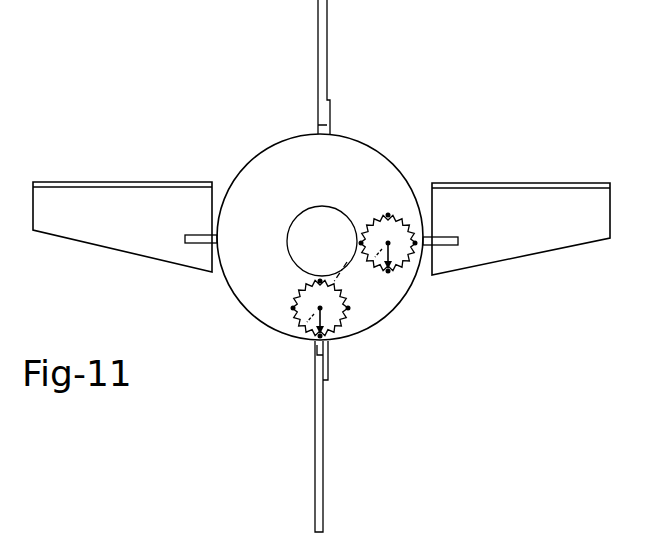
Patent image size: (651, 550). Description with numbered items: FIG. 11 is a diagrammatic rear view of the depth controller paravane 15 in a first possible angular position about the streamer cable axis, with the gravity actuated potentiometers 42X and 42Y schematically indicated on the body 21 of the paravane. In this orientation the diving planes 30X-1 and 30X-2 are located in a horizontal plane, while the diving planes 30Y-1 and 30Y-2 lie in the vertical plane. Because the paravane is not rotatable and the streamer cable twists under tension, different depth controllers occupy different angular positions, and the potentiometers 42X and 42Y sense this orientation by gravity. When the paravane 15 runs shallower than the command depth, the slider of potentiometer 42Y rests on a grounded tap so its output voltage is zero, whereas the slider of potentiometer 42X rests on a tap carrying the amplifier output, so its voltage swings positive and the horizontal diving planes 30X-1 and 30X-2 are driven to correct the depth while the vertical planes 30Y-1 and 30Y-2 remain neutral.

The depth controller paravane 15 is at (320, 221).
The disc body 21 is at (392, 162).
The diving plane 30X-1 is at (145, 183).
The diving plane 30X-2 is at (560, 183).
The diving plane 30Y-1 is at (320, 448).
The diving plane 30Y-2 is at (328, 18).
The potentiometer 42X is at (372, 217).
The potentiometer 42Y is at (295, 318).